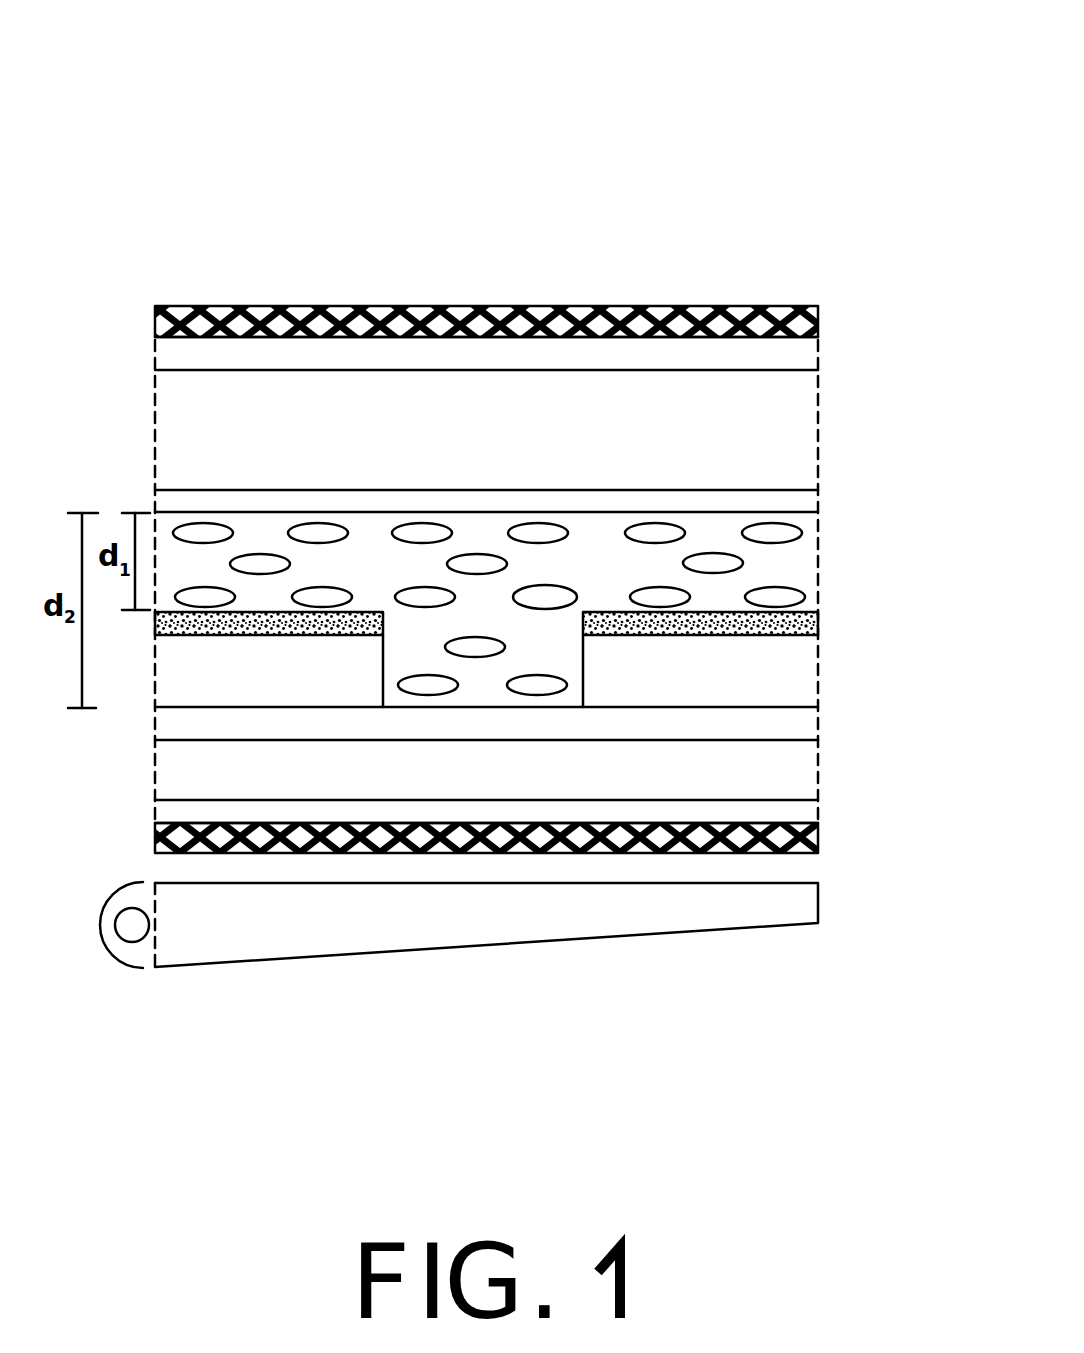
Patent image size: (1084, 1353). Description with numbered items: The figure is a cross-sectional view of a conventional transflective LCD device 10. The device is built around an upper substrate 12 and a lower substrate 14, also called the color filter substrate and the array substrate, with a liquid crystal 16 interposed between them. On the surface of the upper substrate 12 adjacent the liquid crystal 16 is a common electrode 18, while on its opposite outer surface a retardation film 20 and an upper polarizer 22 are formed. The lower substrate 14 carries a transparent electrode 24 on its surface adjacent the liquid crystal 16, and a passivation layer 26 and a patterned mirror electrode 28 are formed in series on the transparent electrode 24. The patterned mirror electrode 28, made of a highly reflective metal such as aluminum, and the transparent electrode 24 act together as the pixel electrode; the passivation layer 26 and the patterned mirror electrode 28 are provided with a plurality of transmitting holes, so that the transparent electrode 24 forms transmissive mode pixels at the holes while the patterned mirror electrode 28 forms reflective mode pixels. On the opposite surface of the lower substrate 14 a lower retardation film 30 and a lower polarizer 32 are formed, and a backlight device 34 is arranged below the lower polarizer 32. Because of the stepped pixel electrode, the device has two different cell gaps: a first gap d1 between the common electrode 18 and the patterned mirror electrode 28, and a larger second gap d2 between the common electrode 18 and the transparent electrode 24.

The transflective LCD device 10 is at (252, 212).
The upper substrate 12 is at (800, 410).
The lower substrate 14 is at (800, 757).
The liquid crystal 16 is at (808, 555).
The common electrode 18 is at (805, 497).
The retardation film 20 is at (800, 352).
The upper polarizer 22 is at (818, 306).
The transparent electrode 24 is at (800, 715).
The passivation layer 26 is at (800, 675).
The patterned mirror electrode 28 is at (810, 627).
The lower retardation film 30 is at (800, 810).
The lower polarizer 32 is at (818, 852).
The backlight device 34 is at (798, 905).